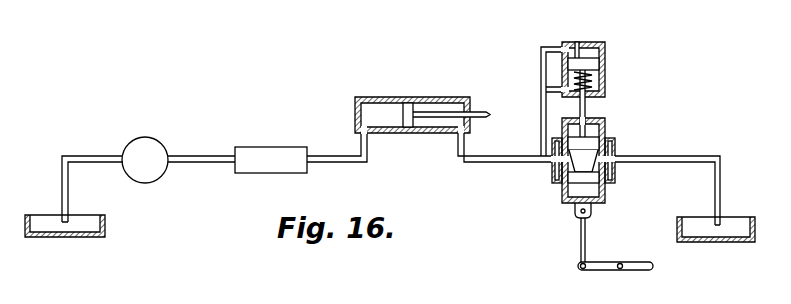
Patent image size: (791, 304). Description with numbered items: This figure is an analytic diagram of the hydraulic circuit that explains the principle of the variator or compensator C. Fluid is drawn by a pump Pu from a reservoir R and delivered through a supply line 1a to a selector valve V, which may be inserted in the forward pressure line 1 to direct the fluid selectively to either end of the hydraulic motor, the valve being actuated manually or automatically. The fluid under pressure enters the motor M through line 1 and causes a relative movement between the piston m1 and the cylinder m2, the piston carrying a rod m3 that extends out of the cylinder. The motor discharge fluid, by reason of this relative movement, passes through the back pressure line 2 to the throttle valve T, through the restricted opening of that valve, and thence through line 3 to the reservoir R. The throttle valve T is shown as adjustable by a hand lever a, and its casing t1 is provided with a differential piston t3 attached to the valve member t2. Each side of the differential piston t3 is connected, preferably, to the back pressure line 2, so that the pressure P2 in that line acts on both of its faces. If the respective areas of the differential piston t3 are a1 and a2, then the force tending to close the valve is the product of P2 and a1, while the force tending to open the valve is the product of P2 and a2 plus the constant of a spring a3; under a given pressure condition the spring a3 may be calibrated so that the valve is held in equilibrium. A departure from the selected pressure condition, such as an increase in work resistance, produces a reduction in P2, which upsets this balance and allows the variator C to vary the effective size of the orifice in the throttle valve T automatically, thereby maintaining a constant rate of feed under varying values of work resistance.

The reservoir R is at (105, 228).
The pump Pu is at (115, 179).
The suction/delivery pipe 1a is at (218, 163).
The selector valve V is at (271, 160).
The forward pressure line 1 is at (345, 165).
The hydraulic motor M is at (413, 102).
The piston m1 is at (418, 128).
The cylinder m2 is at (458, 92).
The piston rod m3 is at (489, 113).
The back pressure line 2 is at (515, 165).
The pressure in the back pressure line P2 is at (541, 101).
The variator C is at (603, 29).
The differential piston area a1 is at (577, 45).
The differential piston t3 is at (605, 52).
The differential piston area a2 is at (605, 80).
The spring a3 is at (565, 103).
The throttle valve T is at (556, 197).
The casing t1 is at (605, 129).
The valve member t2 is at (607, 137).
The line 3 is at (678, 164).
The control lever a is at (632, 271).